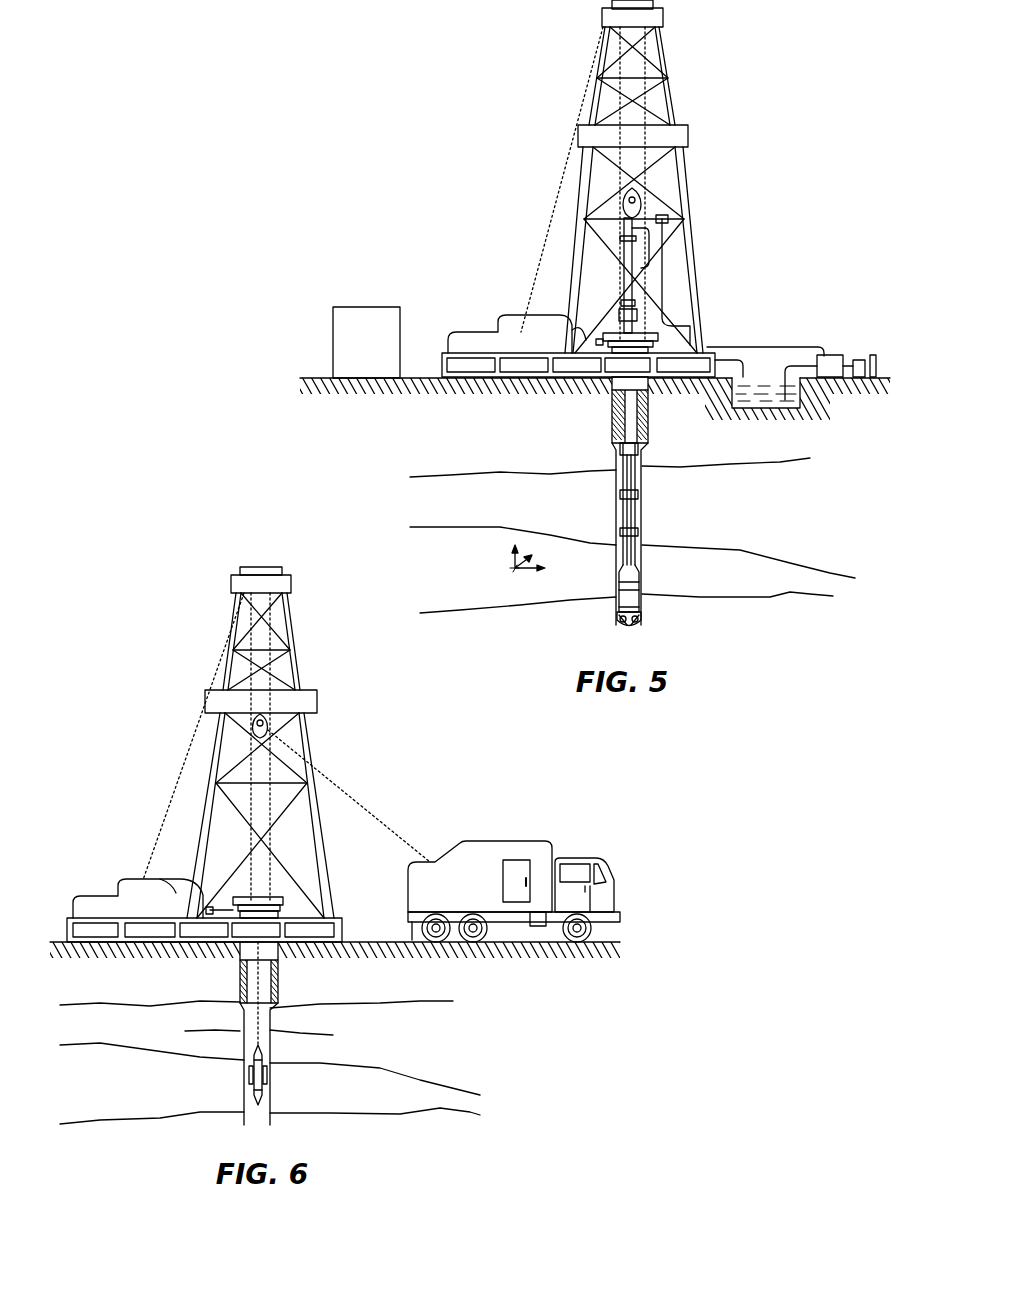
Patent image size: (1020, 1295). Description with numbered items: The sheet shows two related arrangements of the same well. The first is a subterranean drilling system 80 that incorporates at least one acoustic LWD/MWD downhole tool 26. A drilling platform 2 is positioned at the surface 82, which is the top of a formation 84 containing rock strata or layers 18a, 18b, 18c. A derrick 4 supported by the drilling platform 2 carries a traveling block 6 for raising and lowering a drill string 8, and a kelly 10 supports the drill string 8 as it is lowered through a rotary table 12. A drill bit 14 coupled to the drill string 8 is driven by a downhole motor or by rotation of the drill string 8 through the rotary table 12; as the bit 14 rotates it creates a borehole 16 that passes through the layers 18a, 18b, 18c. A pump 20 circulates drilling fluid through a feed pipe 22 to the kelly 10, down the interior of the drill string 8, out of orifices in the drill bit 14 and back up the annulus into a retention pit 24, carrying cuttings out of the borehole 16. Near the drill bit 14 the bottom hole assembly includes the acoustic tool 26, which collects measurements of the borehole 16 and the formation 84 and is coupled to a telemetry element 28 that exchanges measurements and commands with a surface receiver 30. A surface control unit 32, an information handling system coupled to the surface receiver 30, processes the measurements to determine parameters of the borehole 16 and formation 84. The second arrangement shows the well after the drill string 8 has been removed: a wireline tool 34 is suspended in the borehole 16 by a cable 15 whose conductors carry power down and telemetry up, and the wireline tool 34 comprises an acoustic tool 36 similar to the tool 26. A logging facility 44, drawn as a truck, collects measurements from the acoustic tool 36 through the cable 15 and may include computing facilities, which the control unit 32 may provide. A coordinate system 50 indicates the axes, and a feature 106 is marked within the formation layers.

In FIG. 5, the drilling platform 2 is at (440, 362).
In FIG. 6, the drilling platform 2 is at (345, 932).
In FIG. 5, the derrick 4 is at (672, 97).
In FIG. 6, the derrick 4 is at (324, 832).
In FIG. 5, the traveling block 6 is at (641, 200).
In FIG. 6, the traveling block 6 is at (267, 724).
In FIG. 5, the drill string 8 is at (632, 462).
In FIG. 5, the kelly 10 is at (630, 248).
In FIG. 5, the rotary table 12 is at (645, 332).
In FIG. 6, the rotary table 12 is at (272, 895).
In FIG. 5, the drill bit 14 is at (641, 620).
In FIG. 6, the cable 15 is at (255, 985).
In FIG. 5, the borehole 16 is at (636, 480).
In FIG. 6, the borehole 16 is at (262, 1023).
In FIG. 5, the rock stratum or layer 18a is at (410, 564).
In FIG. 6, the rock stratum or layer 18a is at (405, 990).
In FIG. 5, the rock stratum or layer 18b is at (632, 530).
In FIG. 6, the rock stratum or layer 18b is at (57, 1037).
In FIG. 5, the rock stratum or layer 18c is at (760, 455).
In FIG. 6, the rock stratum or layer 18c is at (57, 1110).
In FIG. 5, the pump 20 is at (830, 352).
In FIG. 5, the feed pipe 22 is at (762, 347).
In FIG. 5, the retention pit 24 is at (772, 395).
In FIG. 5, the acoustic LWD/MWD downhole tool 26 is at (626, 593).
In FIG. 5, the telemetry element 28 is at (628, 577).
In FIG. 5, the surface receiver 30 is at (640, 290).
In FIG. 5, the surface control unit 32 is at (352, 352).
In FIG. 6, the wireline tool 34 is at (253, 1057).
In FIG. 6, the acoustic tool 36 is at (250, 1078).
In FIG. 6, the logging facility 44 is at (493, 843).
In FIG. 5, the coordinate system 50 is at (510, 566).
In FIG. 5, the subterranean drilling system 80 is at (768, 148).
In FIG. 5, the surface 82 is at (317, 378).
In FIG. 6, the surface 82 is at (62, 942).
In FIG. 5, the formation 84 is at (336, 447).
In FIG. 6, the formation 84 is at (553, 1017).
In FIG. 6, the fracture 106 is at (320, 1035).